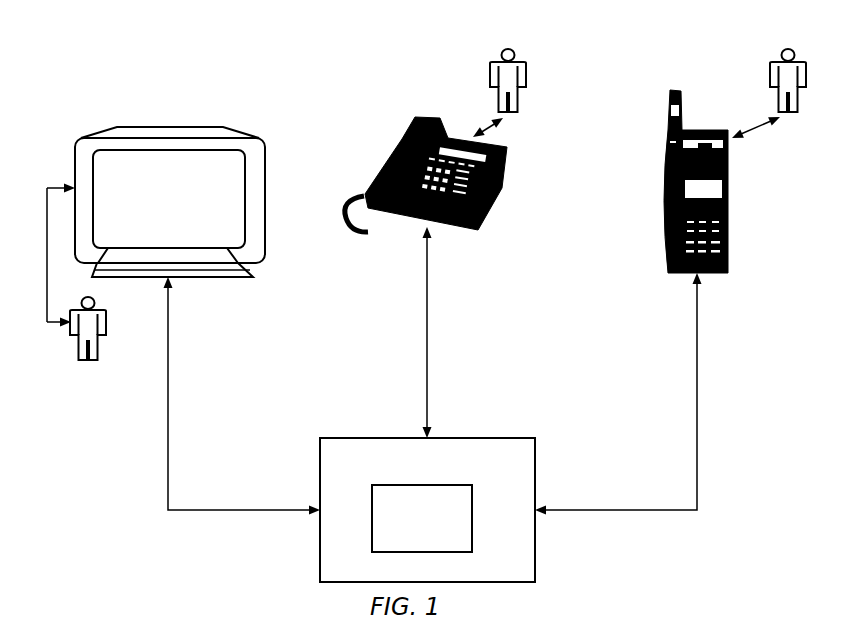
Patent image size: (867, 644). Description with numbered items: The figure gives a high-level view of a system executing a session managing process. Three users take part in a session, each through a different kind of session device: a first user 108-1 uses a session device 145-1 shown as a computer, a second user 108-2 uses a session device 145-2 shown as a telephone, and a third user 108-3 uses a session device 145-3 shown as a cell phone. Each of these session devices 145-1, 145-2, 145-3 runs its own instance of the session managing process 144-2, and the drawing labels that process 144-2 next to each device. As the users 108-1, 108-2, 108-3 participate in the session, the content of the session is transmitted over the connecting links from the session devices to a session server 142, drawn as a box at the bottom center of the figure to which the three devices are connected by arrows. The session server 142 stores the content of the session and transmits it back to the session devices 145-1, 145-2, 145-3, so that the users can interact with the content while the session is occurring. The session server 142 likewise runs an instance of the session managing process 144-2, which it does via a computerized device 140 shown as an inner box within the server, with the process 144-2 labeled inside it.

The session device 145-1 is at (152, 190).
The session device 145-2 is at (426, 159).
The session device 145-3 is at (696, 177).
The user 108-1 is at (80, 338).
The user 108-2 is at (498, 93).
The user 108-3 is at (780, 93).
The session server 142 is at (427, 510).
The computerized device 140 is at (422, 518).
The session managing process 144-2 is at (281, 166).